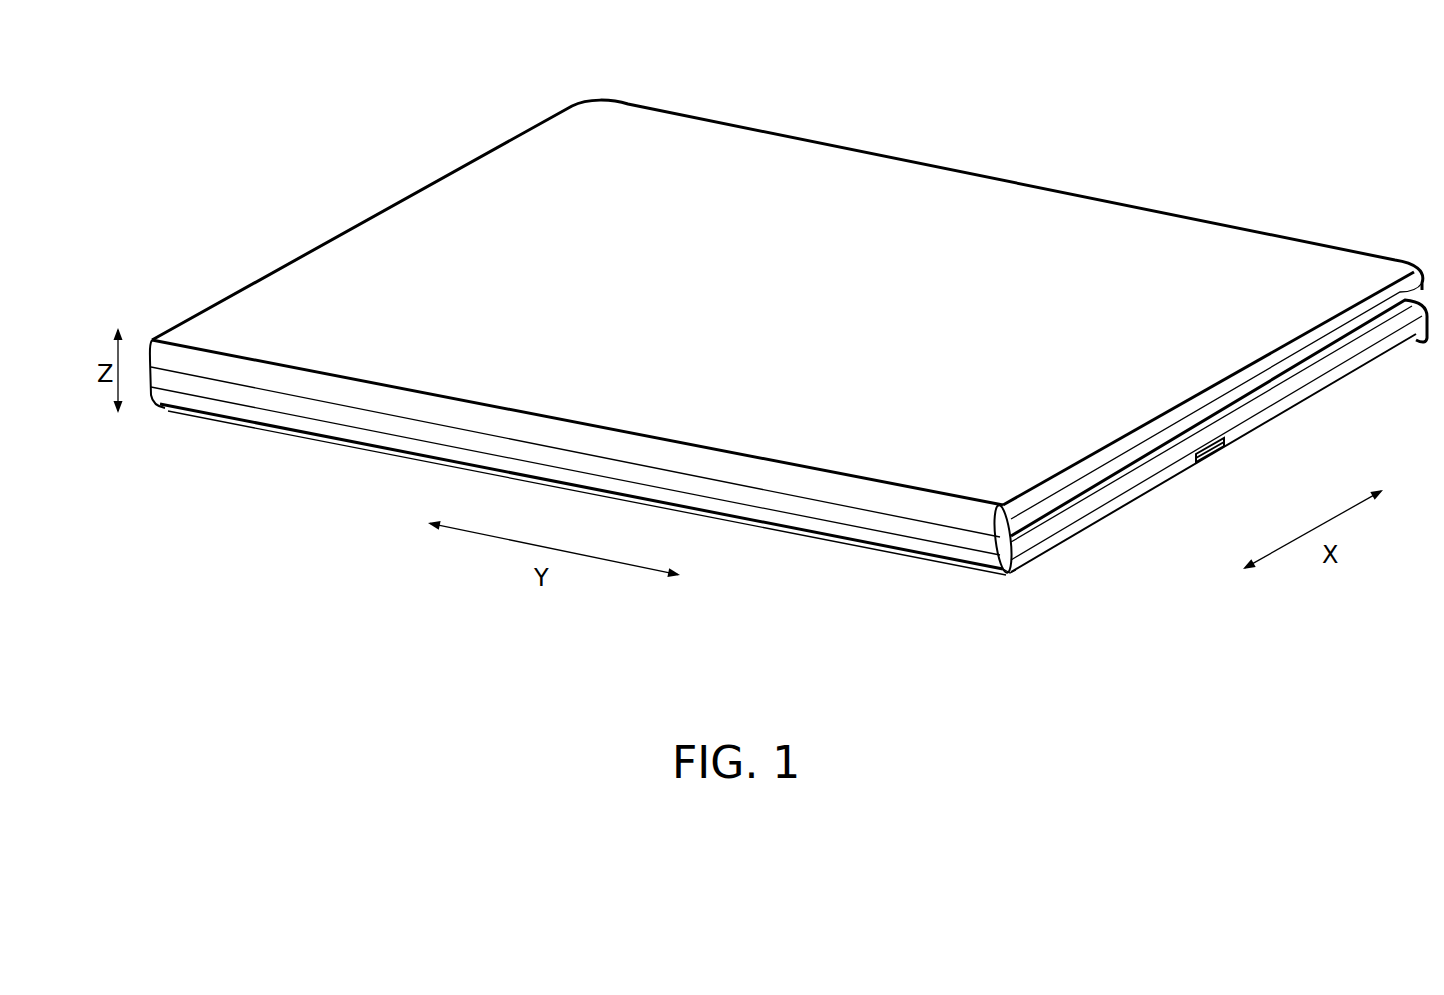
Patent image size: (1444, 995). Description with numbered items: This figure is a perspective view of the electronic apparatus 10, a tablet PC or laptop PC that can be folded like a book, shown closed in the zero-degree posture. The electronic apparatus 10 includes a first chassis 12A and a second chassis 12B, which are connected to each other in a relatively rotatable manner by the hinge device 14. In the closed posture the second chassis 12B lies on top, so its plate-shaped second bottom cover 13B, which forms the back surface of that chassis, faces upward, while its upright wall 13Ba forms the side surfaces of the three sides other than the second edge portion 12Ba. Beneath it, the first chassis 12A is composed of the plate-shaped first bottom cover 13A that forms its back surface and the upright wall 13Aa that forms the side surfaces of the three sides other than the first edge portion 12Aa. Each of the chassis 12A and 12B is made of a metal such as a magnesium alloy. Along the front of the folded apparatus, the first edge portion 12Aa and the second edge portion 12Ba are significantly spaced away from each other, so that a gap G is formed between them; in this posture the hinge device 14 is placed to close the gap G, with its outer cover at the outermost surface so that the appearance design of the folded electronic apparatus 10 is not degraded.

The electronic apparatus 10 is at (211, 67).
The second chassis 12B is at (901, 195).
The second bottom cover 13B is at (996, 207).
The upright wall 13Ba is at (1340, 345).
The gap G is at (870, 494).
The first bottom cover 13A is at (1382, 354).
The upright wall 13Aa is at (1397, 362).
The first chassis 12A is at (1270, 437).
The hinge device 14 is at (762, 497).
The second edge portion 12Ba is at (1055, 535).
The first edge portion 12Aa is at (1022, 572).